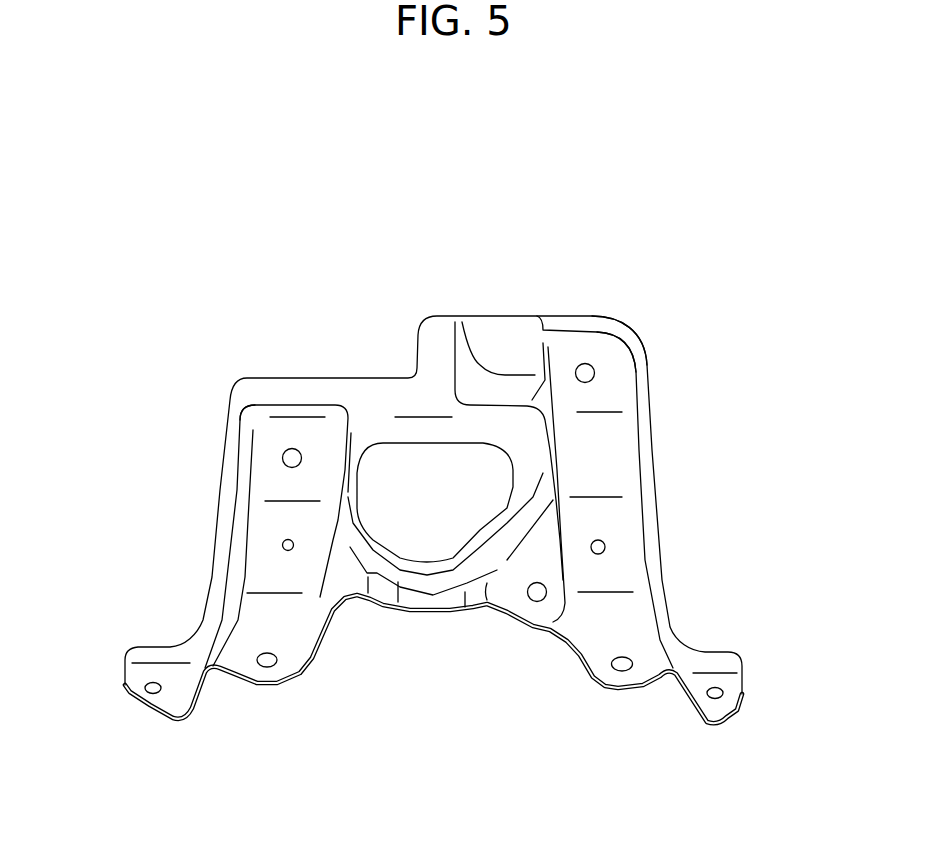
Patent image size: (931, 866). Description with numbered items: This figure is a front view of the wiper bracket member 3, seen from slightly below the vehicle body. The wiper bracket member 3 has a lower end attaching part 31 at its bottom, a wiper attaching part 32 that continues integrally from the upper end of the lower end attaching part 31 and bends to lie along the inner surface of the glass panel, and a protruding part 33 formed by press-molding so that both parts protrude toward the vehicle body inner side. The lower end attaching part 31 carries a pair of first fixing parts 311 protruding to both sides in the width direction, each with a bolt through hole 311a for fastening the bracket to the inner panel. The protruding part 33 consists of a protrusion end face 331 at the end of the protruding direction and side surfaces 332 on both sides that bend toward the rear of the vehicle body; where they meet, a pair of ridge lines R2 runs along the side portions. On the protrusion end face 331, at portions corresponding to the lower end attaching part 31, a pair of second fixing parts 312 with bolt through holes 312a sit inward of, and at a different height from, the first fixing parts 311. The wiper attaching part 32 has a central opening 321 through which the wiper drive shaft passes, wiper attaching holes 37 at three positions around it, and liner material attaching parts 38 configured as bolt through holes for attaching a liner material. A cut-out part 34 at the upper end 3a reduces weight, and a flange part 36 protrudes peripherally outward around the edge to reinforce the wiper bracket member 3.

The wiper bracket member 3 is at (434, 451).
The upper end 3a is at (456, 410).
The lower end attaching part 31 is at (460, 687).
The first fixing parts 311 is at (434, 719).
The bolt through holes 311a is at (434, 740).
The second fixing parts 312 is at (440, 694).
The bolt through holes 312a is at (444, 724).
The wiper attaching part 32 is at (563, 480).
The opening 321 is at (563, 480).
The protruding part 33 is at (666, 484).
The protrusion end face 331 is at (223, 536).
The side surfaces 332 is at (455, 492).
The cut-out part 34 is at (450, 454).
The flange part 36 is at (677, 332).
The wiper attaching holes 37 is at (379, 518).
The liner material attaching parts 38 is at (449, 559).
The ridge lines R2 is at (434, 470).